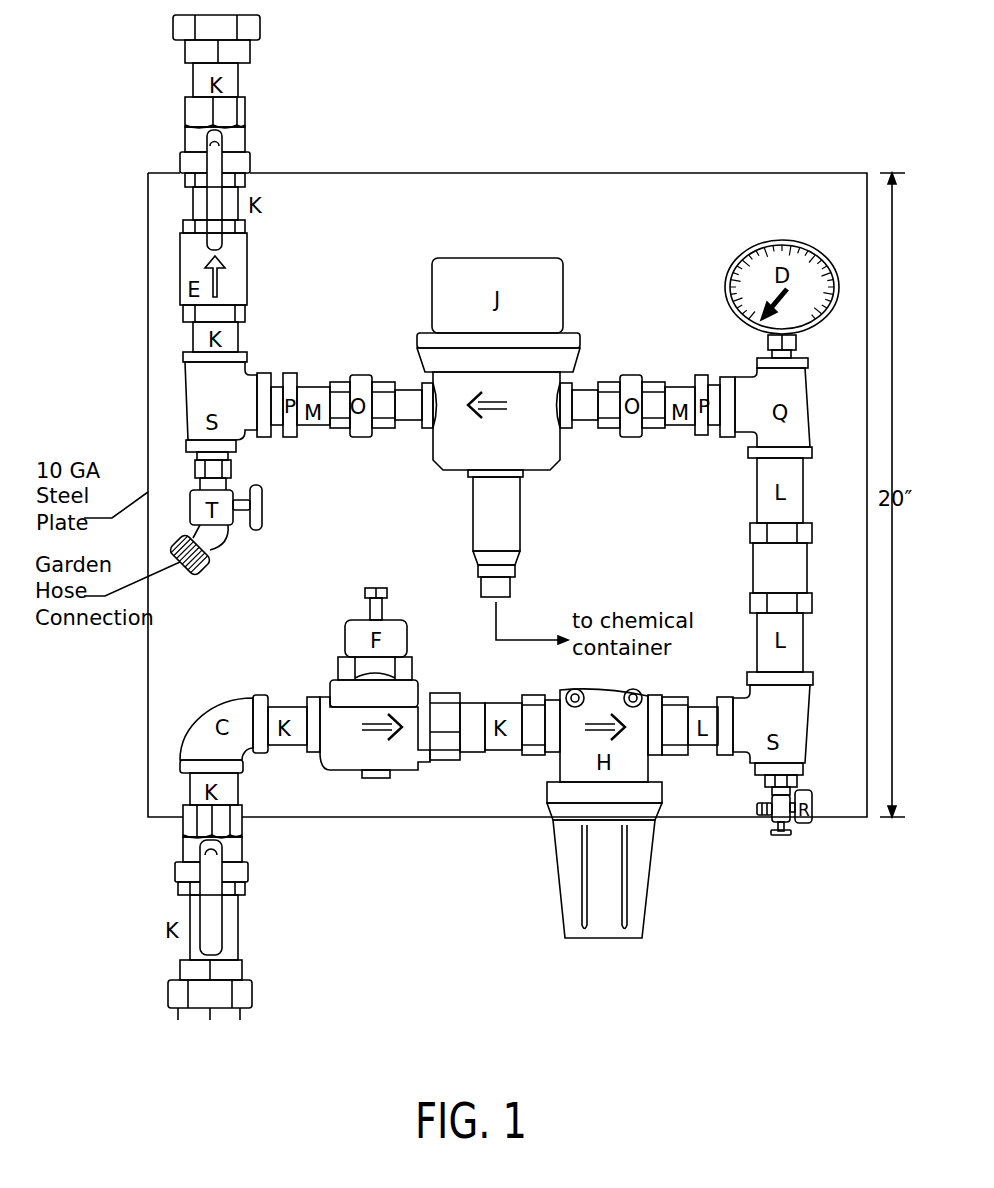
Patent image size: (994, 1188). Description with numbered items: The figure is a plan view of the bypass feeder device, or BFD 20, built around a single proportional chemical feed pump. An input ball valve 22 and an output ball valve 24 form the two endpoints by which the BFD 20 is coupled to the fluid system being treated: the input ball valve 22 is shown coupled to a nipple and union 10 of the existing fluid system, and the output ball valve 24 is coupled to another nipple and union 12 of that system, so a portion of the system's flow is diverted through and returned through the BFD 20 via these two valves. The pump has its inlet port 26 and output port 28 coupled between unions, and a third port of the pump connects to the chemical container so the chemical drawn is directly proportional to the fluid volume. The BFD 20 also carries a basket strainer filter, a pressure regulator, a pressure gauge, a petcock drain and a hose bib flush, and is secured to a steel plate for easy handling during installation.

The nipple/union of existing fluid system 10 is at (272, 982).
The nipple/union of existing fluid system 12 is at (268, 61).
The bypass feeder device (BFD) 20 is at (453, 426).
The input ball valve 22 is at (262, 895).
The output ball valve 24 is at (263, 143).
The inlet port 26 is at (591, 362).
The output port 28 is at (398, 362).